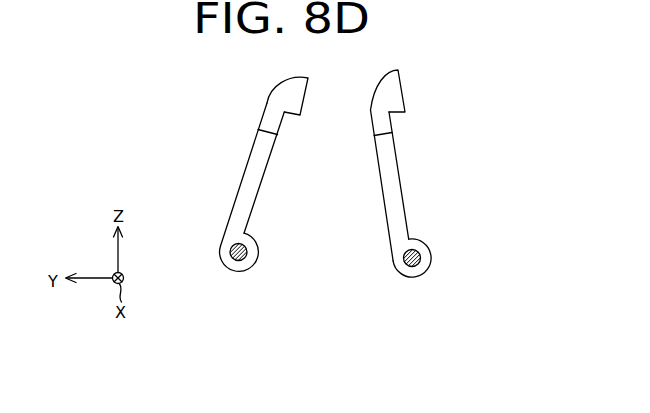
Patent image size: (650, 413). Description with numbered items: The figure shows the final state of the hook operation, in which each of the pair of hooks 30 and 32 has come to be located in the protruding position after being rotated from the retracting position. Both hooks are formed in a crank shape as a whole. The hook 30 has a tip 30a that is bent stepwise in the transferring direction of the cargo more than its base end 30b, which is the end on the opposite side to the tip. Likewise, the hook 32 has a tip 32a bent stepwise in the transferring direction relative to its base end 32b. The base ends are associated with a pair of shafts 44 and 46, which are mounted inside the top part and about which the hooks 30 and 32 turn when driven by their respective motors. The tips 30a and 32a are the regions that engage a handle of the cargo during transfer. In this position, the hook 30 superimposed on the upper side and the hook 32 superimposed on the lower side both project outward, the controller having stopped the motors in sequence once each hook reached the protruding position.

The hook 30 is at (240, 197).
The tip of the hook 30a is at (281, 90).
The base end of the hook 30b is at (223, 250).
The shaft 44 is at (243, 264).
The hook 32 is at (398, 208).
The tip of the hook 32a is at (400, 95).
The base end of the hook 32b is at (429, 252).
The shaft 46 is at (415, 268).